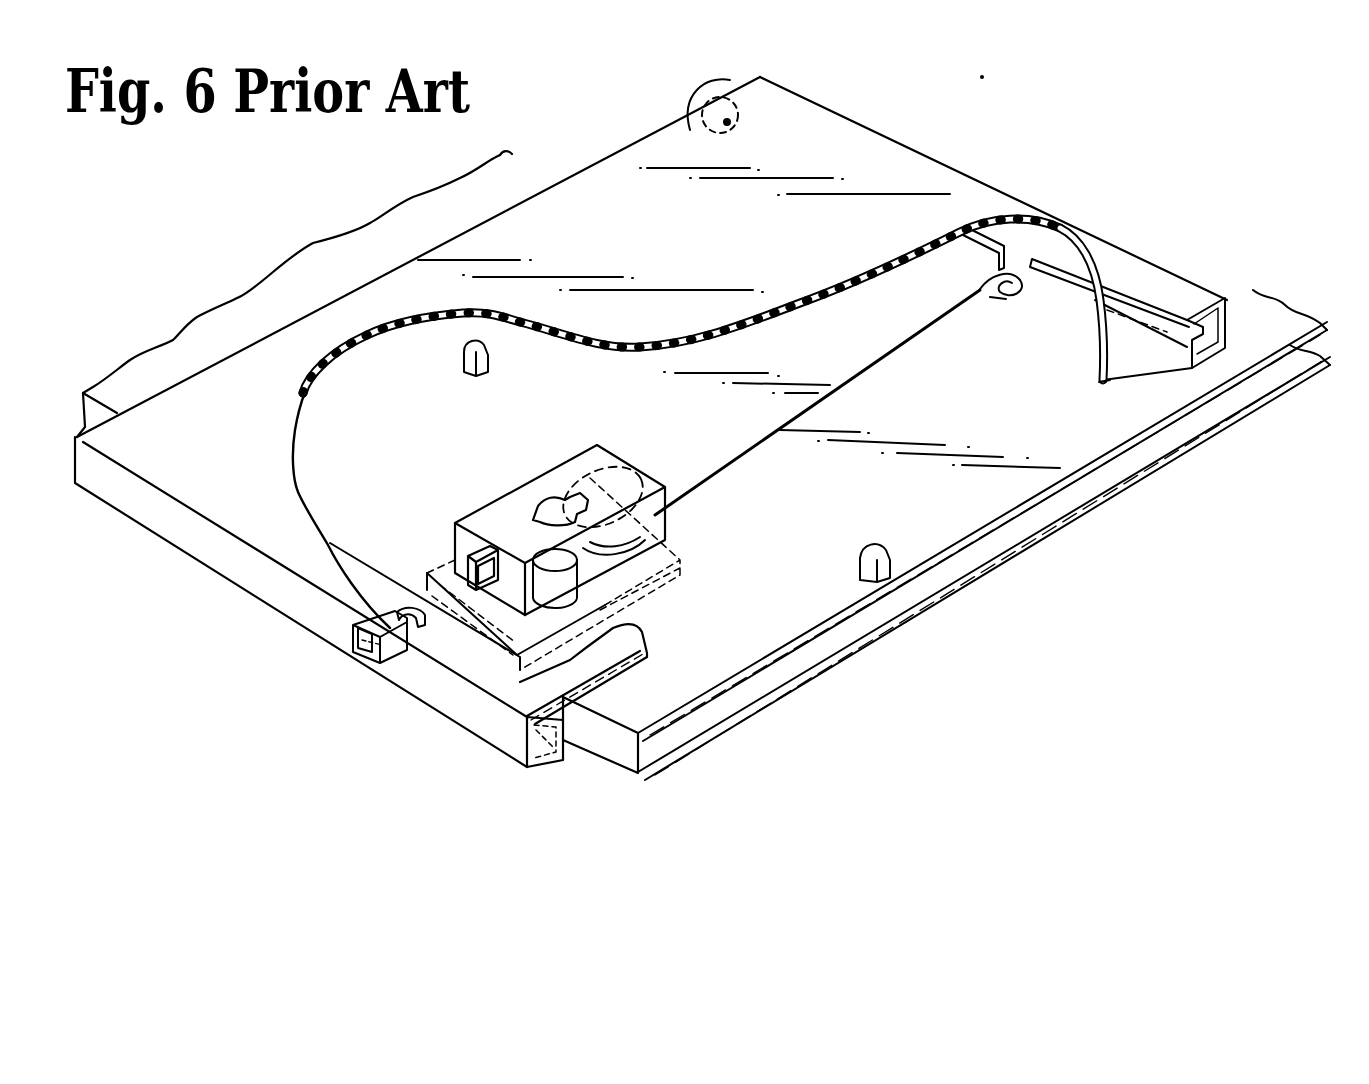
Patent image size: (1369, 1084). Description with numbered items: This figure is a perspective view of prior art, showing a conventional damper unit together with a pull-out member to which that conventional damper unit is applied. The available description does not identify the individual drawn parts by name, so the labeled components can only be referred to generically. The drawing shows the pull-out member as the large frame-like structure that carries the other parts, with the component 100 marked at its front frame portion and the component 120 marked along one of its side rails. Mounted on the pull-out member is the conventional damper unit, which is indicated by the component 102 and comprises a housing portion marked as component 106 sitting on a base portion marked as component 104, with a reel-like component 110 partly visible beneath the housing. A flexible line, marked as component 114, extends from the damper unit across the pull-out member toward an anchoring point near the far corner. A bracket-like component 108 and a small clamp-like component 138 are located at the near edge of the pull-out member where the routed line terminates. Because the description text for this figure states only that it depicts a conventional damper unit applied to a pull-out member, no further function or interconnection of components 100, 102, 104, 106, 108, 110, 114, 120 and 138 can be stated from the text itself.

The frame member 100 is at (470, 737).
The cable retractor 102 is at (684, 517).
The base plate 104 is at (625, 455).
The housing 106 is at (497, 515).
The cable bracket 108 is at (393, 608).
The reel spool 110 is at (593, 563).
The cable wire 114 is at (755, 446).
The guide rail 120 is at (897, 597).
The clamp 138 is at (357, 637).